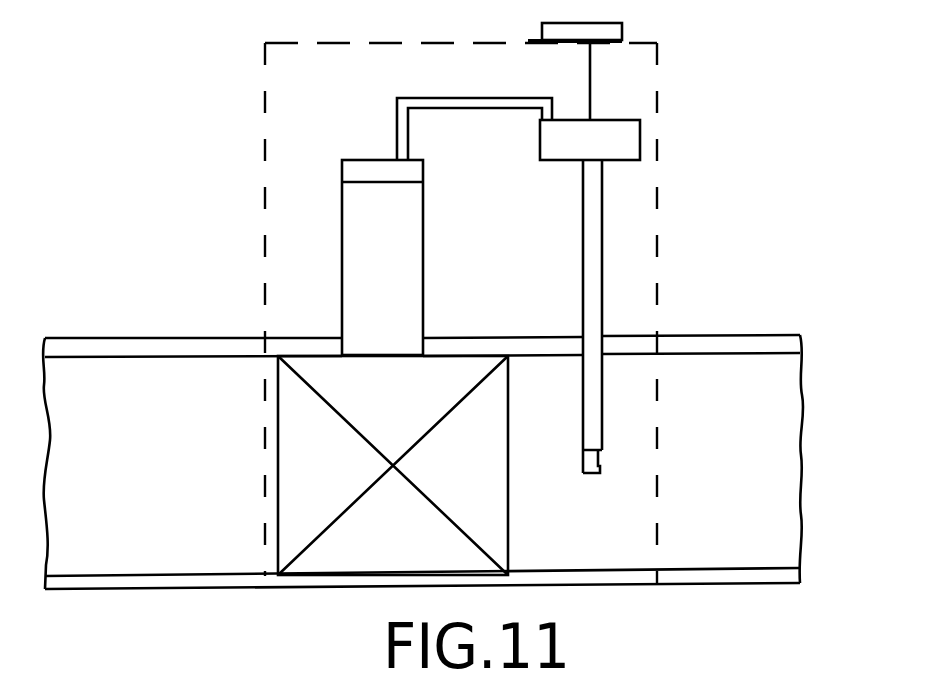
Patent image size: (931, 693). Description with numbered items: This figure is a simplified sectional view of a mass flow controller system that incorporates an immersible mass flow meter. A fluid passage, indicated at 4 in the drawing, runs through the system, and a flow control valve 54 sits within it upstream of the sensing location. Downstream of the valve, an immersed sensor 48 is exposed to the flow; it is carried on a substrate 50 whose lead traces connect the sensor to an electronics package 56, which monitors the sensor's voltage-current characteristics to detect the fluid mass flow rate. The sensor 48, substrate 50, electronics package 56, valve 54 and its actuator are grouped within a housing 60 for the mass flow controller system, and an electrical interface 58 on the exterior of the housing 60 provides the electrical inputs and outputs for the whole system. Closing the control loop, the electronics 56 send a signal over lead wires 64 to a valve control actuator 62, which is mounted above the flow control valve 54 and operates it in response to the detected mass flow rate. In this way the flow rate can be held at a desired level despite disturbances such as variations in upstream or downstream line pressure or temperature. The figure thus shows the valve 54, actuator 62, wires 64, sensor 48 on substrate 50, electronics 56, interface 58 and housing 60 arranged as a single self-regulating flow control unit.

The frame member 4 is at (162, 590).
The sensor 48 is at (602, 466).
The substrate 50 is at (602, 255).
The flow control valve 54 is at (278, 427).
The electronics package 56 is at (640, 141).
The electrical interface 58 is at (622, 33).
The housing 60 is at (263, 100).
The valve control actuator 62 is at (342, 231).
The lead wires 64 is at (418, 97).